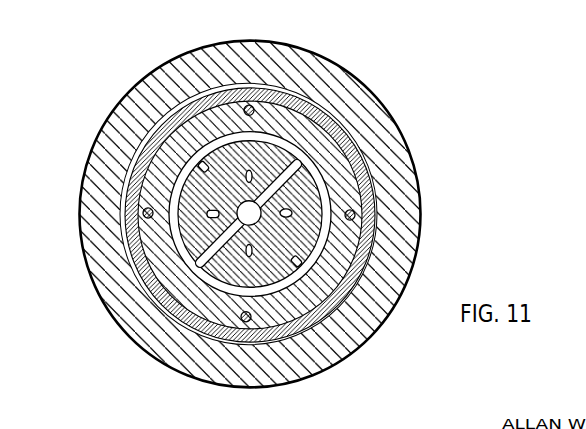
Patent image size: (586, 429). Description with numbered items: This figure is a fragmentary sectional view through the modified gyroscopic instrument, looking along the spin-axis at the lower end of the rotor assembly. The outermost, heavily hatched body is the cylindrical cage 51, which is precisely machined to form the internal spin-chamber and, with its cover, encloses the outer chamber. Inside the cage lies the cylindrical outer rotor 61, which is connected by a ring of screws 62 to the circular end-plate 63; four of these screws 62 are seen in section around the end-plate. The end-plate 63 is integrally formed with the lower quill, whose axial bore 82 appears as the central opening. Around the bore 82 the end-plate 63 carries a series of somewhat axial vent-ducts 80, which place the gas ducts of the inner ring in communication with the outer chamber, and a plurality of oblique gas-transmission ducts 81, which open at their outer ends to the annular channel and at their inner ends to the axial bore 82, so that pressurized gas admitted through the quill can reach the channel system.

The cylindrical cage 51 is at (417, 175).
The cylindrical outer rotor 61 is at (345, 128).
The screws 62 is at (253, 108).
The circular end-plate 63 is at (160, 263).
The vent-ducts 80 is at (247, 250).
The oblique gas-transmission ducts 81 is at (207, 175).
The axial bore 82 is at (238, 213).